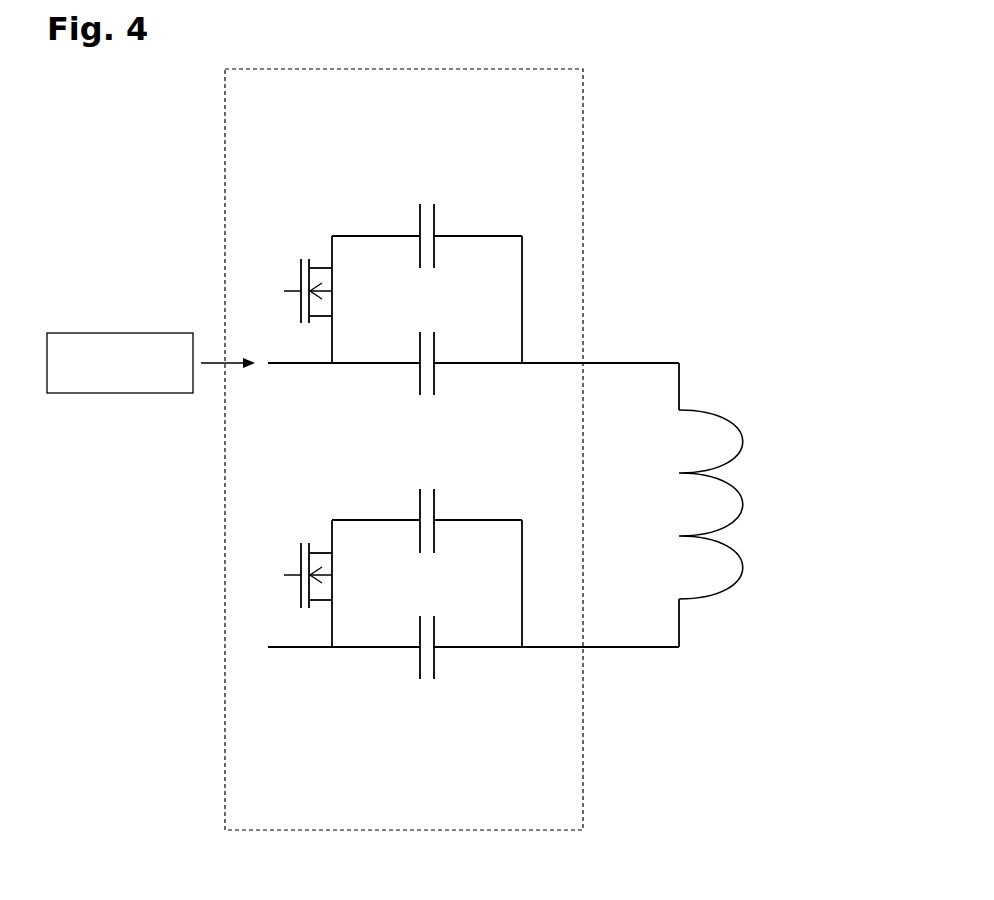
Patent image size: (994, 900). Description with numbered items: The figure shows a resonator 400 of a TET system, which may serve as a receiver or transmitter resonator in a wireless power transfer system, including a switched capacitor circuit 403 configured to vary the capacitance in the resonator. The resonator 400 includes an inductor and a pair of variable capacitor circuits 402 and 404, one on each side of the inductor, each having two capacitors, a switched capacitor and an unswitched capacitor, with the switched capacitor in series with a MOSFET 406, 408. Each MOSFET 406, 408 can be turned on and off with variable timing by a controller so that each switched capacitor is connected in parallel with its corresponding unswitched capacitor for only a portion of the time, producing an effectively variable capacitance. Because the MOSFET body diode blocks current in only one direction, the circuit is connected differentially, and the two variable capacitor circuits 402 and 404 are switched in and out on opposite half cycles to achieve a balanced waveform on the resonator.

The resonator 400 is at (769, 172).
The variable capacitor circuit 402 is at (433, 162).
The switched capacitor circuit 403 is at (583, 258).
The variable capacitor circuit 404 is at (453, 735).
The MOSFET 406 is at (301, 238).
The MOSFET 408 is at (308, 632).